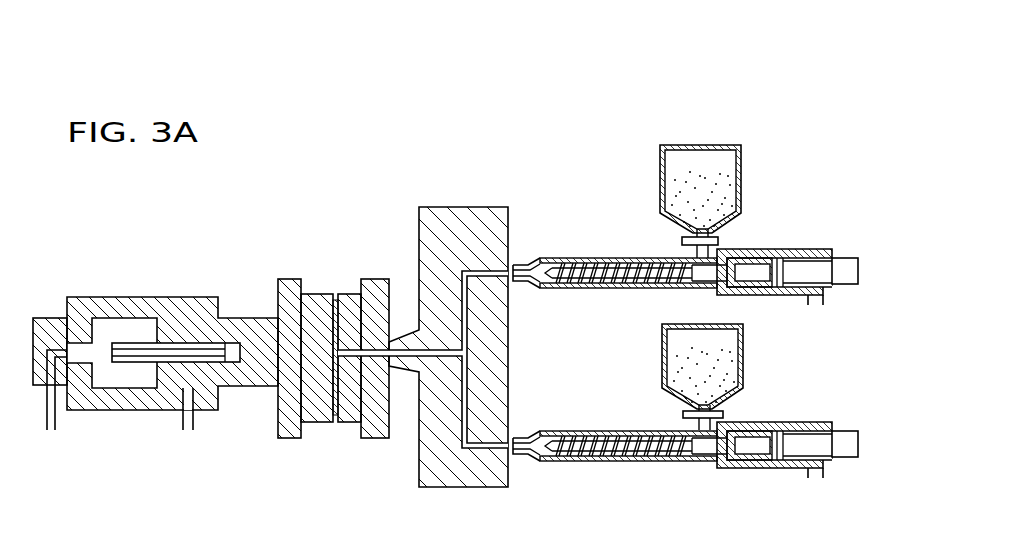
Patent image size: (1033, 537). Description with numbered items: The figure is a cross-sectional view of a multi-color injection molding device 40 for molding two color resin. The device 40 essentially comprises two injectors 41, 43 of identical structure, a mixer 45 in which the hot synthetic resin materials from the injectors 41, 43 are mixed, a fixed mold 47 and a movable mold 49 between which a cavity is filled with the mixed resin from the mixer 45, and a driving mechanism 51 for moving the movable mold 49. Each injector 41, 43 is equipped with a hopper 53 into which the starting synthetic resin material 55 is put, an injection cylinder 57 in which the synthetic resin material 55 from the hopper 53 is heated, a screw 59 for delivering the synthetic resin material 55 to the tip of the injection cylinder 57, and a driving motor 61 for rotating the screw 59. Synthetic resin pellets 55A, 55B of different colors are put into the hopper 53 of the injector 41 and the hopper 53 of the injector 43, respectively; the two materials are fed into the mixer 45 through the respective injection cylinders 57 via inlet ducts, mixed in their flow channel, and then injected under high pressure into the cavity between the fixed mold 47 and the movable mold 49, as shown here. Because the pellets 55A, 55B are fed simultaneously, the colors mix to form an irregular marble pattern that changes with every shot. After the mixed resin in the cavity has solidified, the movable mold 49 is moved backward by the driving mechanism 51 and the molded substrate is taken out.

The multi-color injection molding device 40 is at (814, 80).
The injector 41 is at (802, 220).
The injector 43 is at (818, 410).
The mixer 45 is at (484, 206).
The fixed mold 47 is at (352, 291).
The movable mold 49 is at (319, 291).
The driving mechanism 51 is at (178, 280).
The hopper 53 is at (742, 145).
The synthetic resin material 55 is at (690, 172).
The synthetic resin pellets 55A is at (525, 289).
The synthetic resin pellets 55B is at (528, 462).
The injection cylinder 57 is at (588, 257).
The screw 59 is at (637, 265).
The driving motor 61 is at (840, 256).